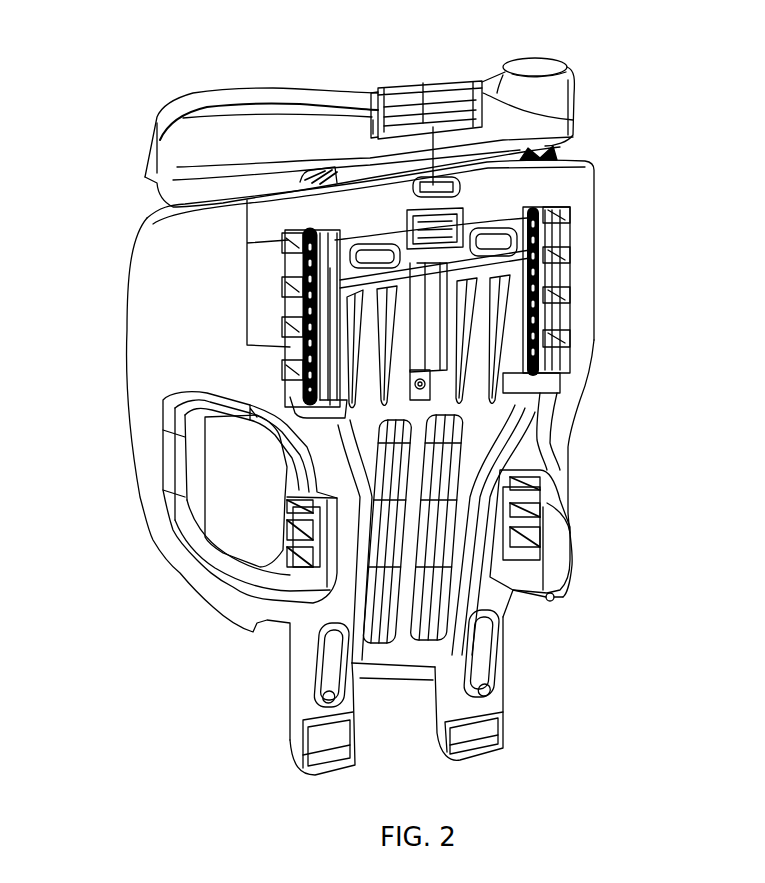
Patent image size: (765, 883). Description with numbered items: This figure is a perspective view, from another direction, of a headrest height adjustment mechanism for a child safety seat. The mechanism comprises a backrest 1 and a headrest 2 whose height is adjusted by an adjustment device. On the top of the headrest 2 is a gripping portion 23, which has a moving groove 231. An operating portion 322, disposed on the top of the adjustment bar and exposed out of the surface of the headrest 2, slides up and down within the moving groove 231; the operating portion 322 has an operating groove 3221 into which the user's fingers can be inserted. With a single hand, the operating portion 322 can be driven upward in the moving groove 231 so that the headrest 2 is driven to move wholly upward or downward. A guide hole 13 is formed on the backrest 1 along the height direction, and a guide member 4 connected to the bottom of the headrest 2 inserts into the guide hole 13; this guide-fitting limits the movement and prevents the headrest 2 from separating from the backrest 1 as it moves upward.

The backrest 1 is at (215, 598).
The headrest 2 is at (155, 158).
The guide member 4 is at (437, 390).
The guide hole 13 is at (425, 352).
The gripping portion 23 is at (416, 84).
The moving groove 231 is at (525, 115).
The operating portion 322 is at (361, 112).
The operating groove 3221 is at (368, 125).